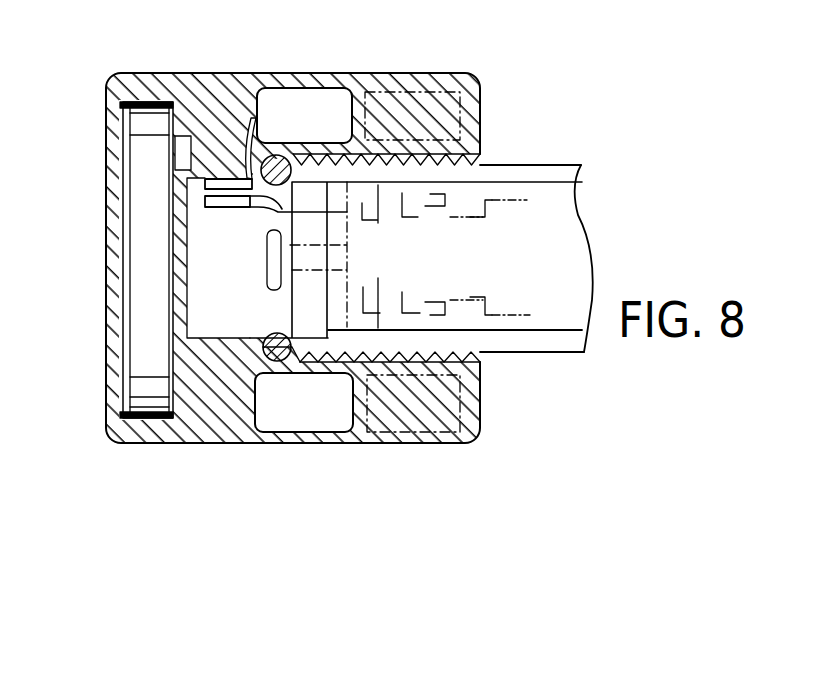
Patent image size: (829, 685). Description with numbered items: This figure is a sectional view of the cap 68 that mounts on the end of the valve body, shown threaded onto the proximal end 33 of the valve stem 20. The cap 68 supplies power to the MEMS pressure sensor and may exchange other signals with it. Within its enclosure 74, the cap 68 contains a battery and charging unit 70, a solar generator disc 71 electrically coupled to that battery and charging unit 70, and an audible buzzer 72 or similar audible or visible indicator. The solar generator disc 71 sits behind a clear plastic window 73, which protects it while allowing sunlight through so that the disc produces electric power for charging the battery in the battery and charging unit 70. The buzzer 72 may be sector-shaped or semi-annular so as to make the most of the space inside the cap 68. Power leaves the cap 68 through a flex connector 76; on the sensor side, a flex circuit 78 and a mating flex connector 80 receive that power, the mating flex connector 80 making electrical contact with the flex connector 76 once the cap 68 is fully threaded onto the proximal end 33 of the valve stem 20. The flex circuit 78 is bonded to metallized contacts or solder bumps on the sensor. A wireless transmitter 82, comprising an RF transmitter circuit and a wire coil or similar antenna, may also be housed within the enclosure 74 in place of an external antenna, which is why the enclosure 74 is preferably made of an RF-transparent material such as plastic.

The valve stem 20 is at (467, 274).
The proximal end 33 is at (478, 160).
The cap 68 is at (305, 248).
The battery and charging unit 70 is at (138, 192).
The solar generator disc 71 is at (125, 349).
The audible buzzer 72 is at (318, 96).
The clear plastic window 73 is at (115, 268).
The enclosure 74 is at (200, 446).
The flex connector 76 is at (223, 180).
The flex circuit 78 is at (273, 208).
The mating flex connector 80 is at (220, 206).
The wireless transmitter 82 is at (483, 80).